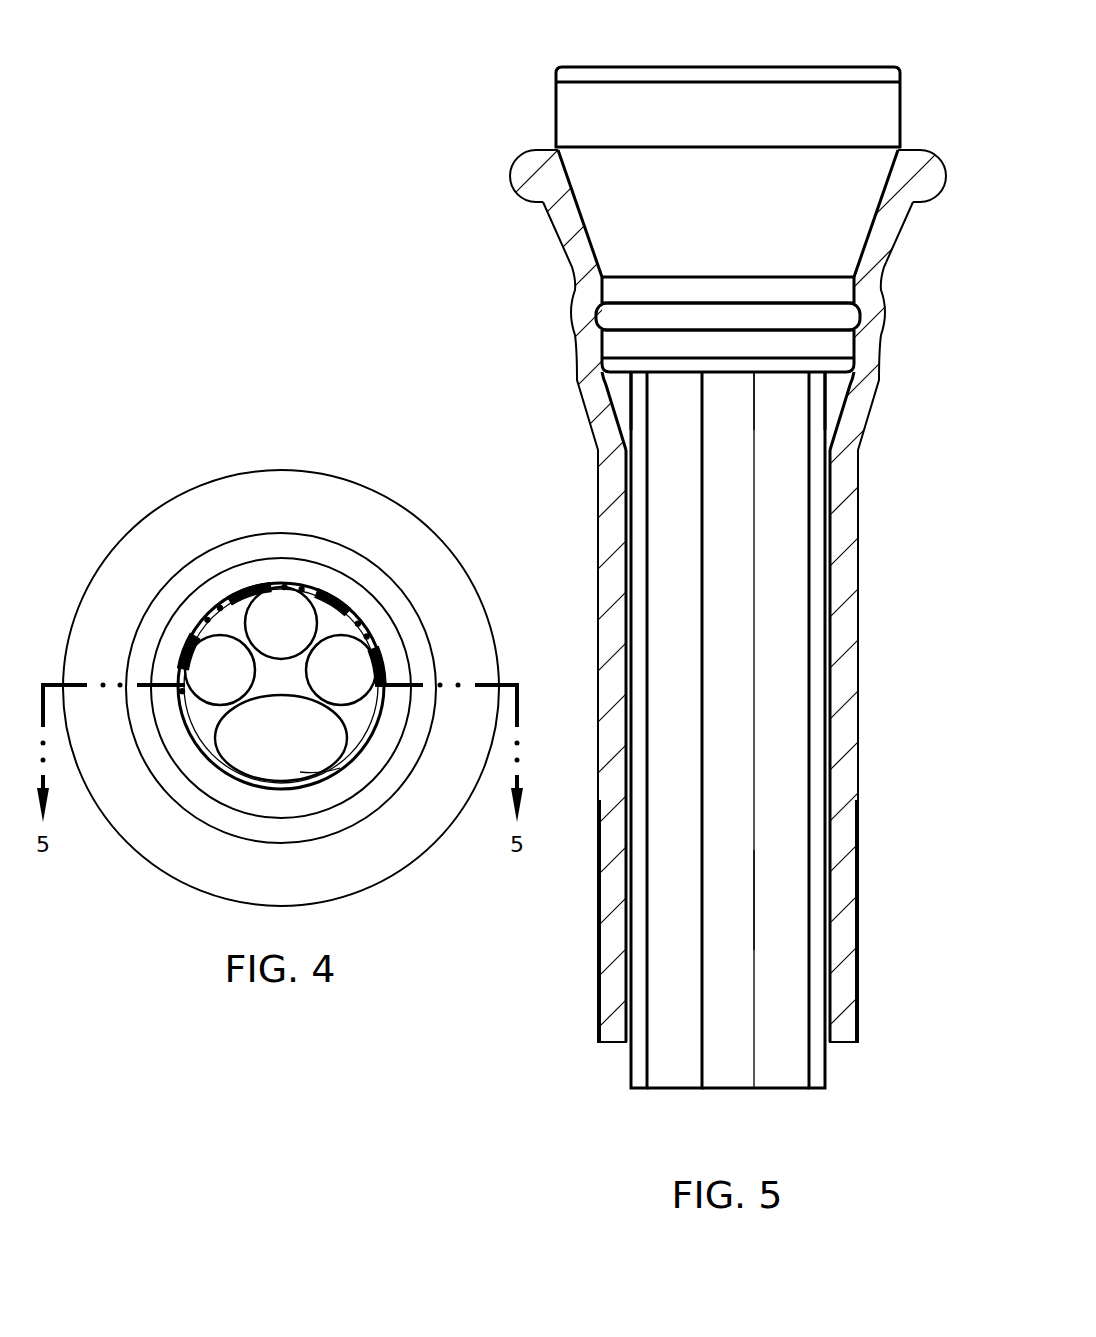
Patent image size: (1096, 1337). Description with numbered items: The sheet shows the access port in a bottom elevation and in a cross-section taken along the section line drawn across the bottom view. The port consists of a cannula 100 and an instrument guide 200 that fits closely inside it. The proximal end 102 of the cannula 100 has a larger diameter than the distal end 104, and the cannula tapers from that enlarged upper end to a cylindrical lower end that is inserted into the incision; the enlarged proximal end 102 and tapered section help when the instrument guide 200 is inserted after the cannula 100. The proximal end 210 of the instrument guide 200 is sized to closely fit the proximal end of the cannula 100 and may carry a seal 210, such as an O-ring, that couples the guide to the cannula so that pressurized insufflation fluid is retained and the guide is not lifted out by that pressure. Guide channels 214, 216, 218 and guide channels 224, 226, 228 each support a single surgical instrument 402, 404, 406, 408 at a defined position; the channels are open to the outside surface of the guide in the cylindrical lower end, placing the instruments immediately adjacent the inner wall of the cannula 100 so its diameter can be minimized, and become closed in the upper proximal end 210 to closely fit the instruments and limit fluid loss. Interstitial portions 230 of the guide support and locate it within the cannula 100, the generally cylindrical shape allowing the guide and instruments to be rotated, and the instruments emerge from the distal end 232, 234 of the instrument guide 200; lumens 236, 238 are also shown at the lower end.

In FIG. 4, the cannula 100 is at (308, 537).
In FIG. 5, the cannula 100 is at (575, 365).
In FIG. 4, the proximal end of the cannula 102 is at (387, 493).
In FIG. 5, the proximal end of the cannula 102 is at (510, 180).
In FIG. 4, the distal end of the cannula 104 is at (283, 575).
In FIG. 5, the distal end of the cannula 104 is at (615, 1045).
In FIG. 5, the instrument guide 200 is at (555, 115).
In FIG. 5, the proximal end of the instrument guide 210 is at (727, 65).
In FIG. 5, the guide channel 214 is at (817, 372).
In FIG. 5, the guide channel 216 is at (727, 372).
In FIG. 5, the guide channel 218 is at (638, 372).
In FIG. 5, the guide channel 224 is at (817, 870).
In FIG. 5, the guide channel 226 is at (728, 903).
In FIG. 5, the guide channel 228 is at (638, 862).
In FIG. 4, the interstitial portions 230 is at (187, 737).
In FIG. 5, the interstitial portions 230 is at (672, 1092).
In FIG. 4, the distal end of the instrument guide 232 is at (282, 700).
In FIG. 4, the distal end of the instrument guide 234 is at (310, 669).
In FIG. 5, the distal end of the instrument guide 234 is at (816, 1092).
In FIG. 4, the upper lumen 236 is at (281, 655).
In FIG. 5, the upper lumen 236 is at (727, 1090).
In FIG. 4, the left lumen 238 is at (255, 668).
In FIG. 5, the left lumen 238 is at (637, 1093).
In FIG. 4, the surgical instrument 402 is at (330, 775).
In FIG. 4, the surgical instrument 404 is at (367, 637).
In FIG. 4, the surgical instrument 406 is at (243, 587).
In FIG. 4, the surgical instrument 408 is at (193, 633).